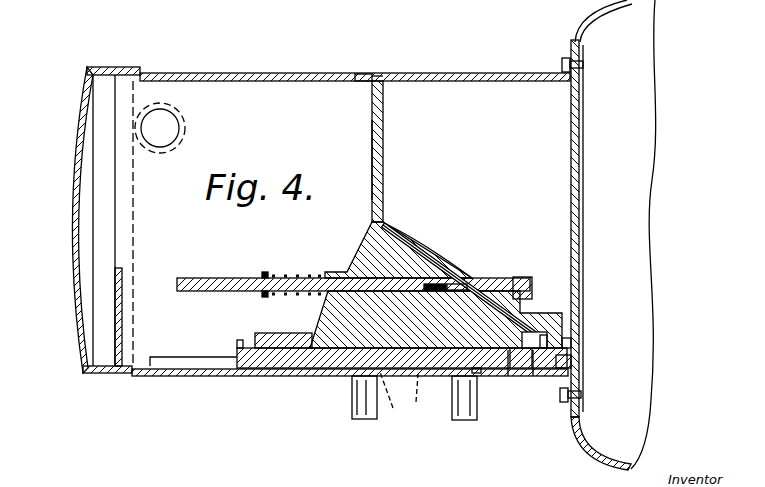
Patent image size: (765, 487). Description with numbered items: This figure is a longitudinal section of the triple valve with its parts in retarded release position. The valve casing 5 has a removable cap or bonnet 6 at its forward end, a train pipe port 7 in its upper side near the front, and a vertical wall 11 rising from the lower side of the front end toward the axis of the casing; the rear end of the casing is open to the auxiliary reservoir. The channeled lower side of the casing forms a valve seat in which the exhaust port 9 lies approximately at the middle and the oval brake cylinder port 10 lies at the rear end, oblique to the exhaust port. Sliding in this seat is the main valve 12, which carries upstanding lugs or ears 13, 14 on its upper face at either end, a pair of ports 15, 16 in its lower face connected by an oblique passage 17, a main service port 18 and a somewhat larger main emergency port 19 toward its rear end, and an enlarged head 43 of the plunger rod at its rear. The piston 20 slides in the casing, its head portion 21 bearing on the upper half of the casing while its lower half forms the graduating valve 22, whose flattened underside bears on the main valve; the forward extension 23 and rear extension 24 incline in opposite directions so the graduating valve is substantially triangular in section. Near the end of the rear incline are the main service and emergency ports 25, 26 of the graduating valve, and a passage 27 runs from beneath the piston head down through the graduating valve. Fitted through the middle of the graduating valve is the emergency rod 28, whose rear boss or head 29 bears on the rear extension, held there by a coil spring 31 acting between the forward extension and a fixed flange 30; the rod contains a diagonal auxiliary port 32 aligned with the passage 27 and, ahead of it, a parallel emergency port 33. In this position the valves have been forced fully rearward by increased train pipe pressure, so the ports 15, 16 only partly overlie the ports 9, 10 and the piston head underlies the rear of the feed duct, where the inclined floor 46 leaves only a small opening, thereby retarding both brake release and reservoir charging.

The valve casing 5 is at (478, 78).
The removable cap or bonnet 6 is at (79, 154).
The train pipe port 7 is at (172, 129).
The exhaust port 9 is at (362, 406).
The brake cylinder port 10 is at (463, 421).
The vertical wall 11 is at (116, 293).
The main valve 12 is at (285, 360).
The upstanding lug or ear 13 is at (240, 340).
The upstanding lug or ear 14 is at (572, 352).
The port of main valve 15 is at (390, 399).
The port of main valve 16 is at (470, 378).
The oblique passage 17 is at (420, 398).
The main service port 18 is at (508, 378).
The main emergency port 19 is at (533, 378).
The piston 20 is at (383, 196).
The head portion 21 is at (376, 150).
The graduating valve 22 is at (370, 258).
The forward extension 23 is at (316, 323).
The rear extension 24 is at (442, 272).
The main service port of graduating valve 25 is at (528, 334).
The main emergency port of graduating valve 26 is at (541, 336).
The passage 27 is at (398, 246).
The emergency rod 28 is at (222, 278).
The boss or head 29 is at (508, 278).
The flange 30 is at (264, 271).
The coil spring 31 is at (292, 273).
The auxiliary port 32 is at (470, 280).
The emergency port 33 is at (455, 284).
The enlarged head 43 is at (357, 75).
The inclined floor of feed duct 46 is at (374, 75).